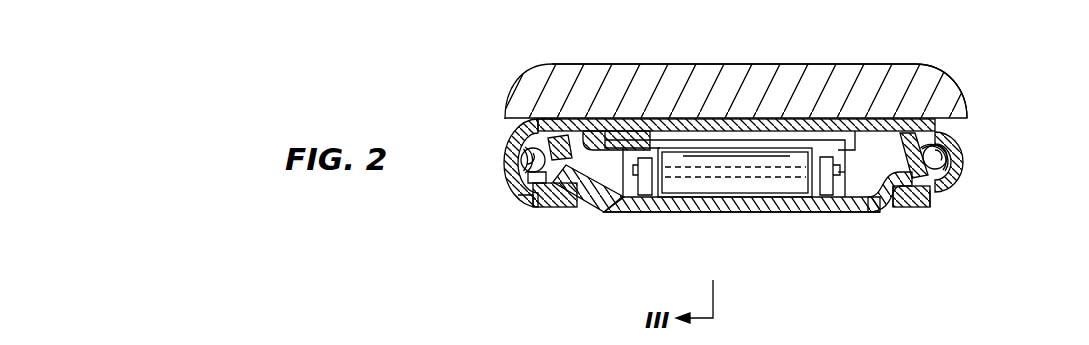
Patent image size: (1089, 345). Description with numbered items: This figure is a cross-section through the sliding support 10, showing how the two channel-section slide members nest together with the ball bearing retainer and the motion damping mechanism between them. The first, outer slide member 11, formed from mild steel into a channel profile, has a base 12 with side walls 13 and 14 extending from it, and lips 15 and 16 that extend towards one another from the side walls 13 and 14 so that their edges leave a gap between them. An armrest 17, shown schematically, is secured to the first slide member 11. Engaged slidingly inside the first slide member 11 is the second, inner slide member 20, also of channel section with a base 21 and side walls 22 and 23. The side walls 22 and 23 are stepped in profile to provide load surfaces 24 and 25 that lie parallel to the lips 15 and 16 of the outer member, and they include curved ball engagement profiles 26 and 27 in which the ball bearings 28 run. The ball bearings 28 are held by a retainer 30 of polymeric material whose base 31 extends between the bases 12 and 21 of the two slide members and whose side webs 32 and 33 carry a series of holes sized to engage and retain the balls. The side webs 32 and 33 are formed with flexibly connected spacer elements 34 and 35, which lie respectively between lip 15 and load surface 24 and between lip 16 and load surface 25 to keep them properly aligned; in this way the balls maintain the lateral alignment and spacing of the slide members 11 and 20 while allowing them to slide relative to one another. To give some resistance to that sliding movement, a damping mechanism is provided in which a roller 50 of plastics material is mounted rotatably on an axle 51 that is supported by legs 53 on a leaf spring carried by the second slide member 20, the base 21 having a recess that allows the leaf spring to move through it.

The sliding support 10 is at (500, 225).
The first, outer slide member 11 is at (762, 128).
The base 12 is at (840, 120).
The side wall 13 is at (506, 163).
The side wall 14 is at (962, 165).
The lip 15 is at (528, 207).
The lip 16 is at (935, 207).
The armrest 17 is at (706, 88).
The second, inner slide member 20 is at (752, 212).
The base 21 is at (820, 212).
The side wall 22 is at (598, 182).
The side wall 23 is at (862, 198).
The load surface 24 is at (557, 186).
The load surface 25 is at (904, 207).
The curved ball engagement profile 26 is at (566, 134).
The curved ball engagement profile 27 is at (885, 127).
The ball bearings 28 is at (528, 168).
The retainer 30 is at (607, 148).
The base 31 is at (860, 150).
The side web 32 is at (522, 197).
The side web 33 is at (942, 135).
The spacer element 34 is at (566, 184).
The spacer element 35 is at (925, 207).
The roller 50 is at (706, 198).
The axle 51 is at (838, 172).
The legs 53 is at (628, 158).